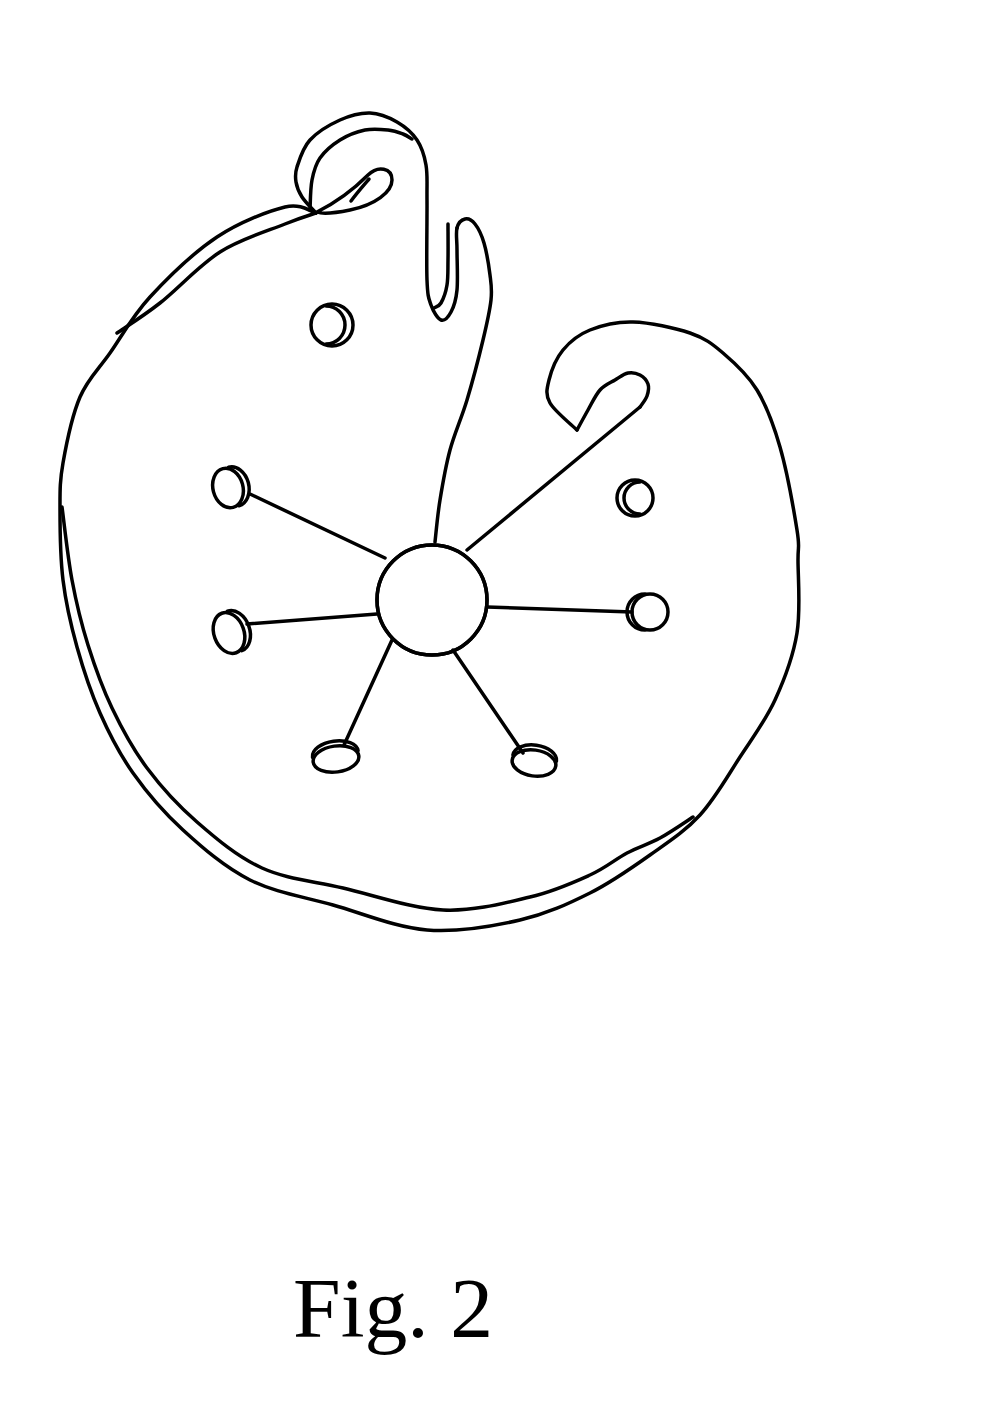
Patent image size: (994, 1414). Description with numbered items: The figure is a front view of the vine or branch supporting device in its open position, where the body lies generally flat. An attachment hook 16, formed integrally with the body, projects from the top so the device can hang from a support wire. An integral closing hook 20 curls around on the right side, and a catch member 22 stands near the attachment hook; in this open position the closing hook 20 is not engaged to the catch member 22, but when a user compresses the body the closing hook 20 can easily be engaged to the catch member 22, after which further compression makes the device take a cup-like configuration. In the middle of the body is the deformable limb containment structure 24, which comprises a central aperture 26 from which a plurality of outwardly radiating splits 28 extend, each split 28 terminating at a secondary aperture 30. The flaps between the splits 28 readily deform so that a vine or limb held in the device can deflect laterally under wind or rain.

The attachment hook 16 is at (360, 110).
The closing hook 20 is at (720, 350).
The catch member 22 is at (483, 233).
The deformable limb containment structure 24 is at (445, 555).
The central aperture 26 is at (453, 620).
The outwardly radiating splits 28 is at (317, 512).
The secondary aperture 30 is at (215, 475).